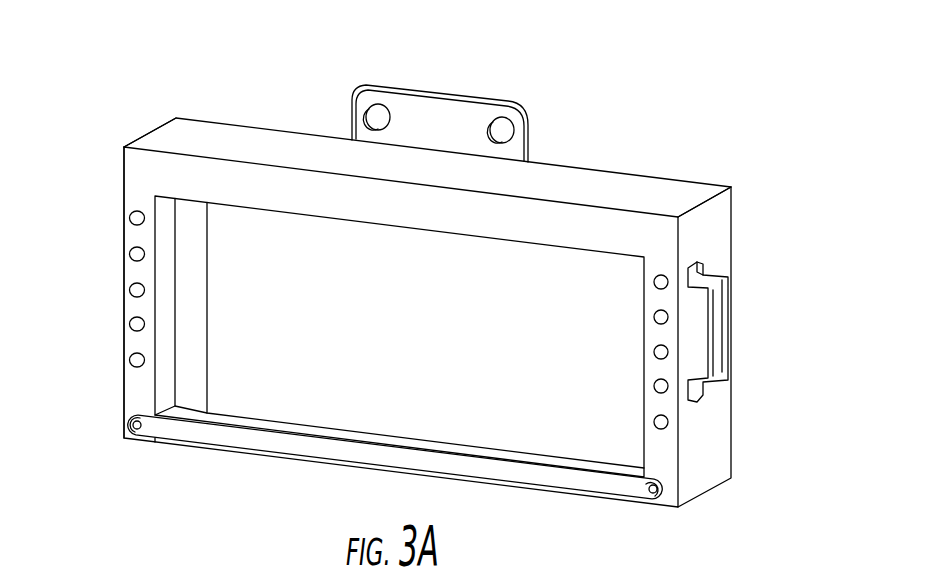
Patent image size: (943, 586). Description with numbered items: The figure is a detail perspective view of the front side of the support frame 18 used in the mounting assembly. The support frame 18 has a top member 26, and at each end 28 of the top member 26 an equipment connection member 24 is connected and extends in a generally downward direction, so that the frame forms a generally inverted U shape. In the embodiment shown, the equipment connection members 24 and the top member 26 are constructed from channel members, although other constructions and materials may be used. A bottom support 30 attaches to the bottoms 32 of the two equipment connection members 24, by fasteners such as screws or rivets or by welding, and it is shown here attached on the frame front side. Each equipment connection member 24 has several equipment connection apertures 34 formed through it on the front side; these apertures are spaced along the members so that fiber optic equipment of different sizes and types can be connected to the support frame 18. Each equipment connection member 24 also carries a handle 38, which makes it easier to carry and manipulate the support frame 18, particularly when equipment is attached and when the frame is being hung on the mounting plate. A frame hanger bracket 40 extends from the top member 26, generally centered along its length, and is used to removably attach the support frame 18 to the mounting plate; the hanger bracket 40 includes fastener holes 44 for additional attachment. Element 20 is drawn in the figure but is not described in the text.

The support frame 18 is at (717, 160).
The pivot 20 is at (135, 408).
The equipment connection member 24 is at (124, 188).
The top member 26 is at (573, 167).
The end 28 is at (124, 147).
The bottom support 30 is at (238, 448).
The bottom 32 is at (155, 442).
The equipment connection aperture 34 is at (130, 220).
The handle 38 is at (700, 277).
The frame hanger bracket 40 is at (457, 98).
The fastener hole 44 is at (367, 113).